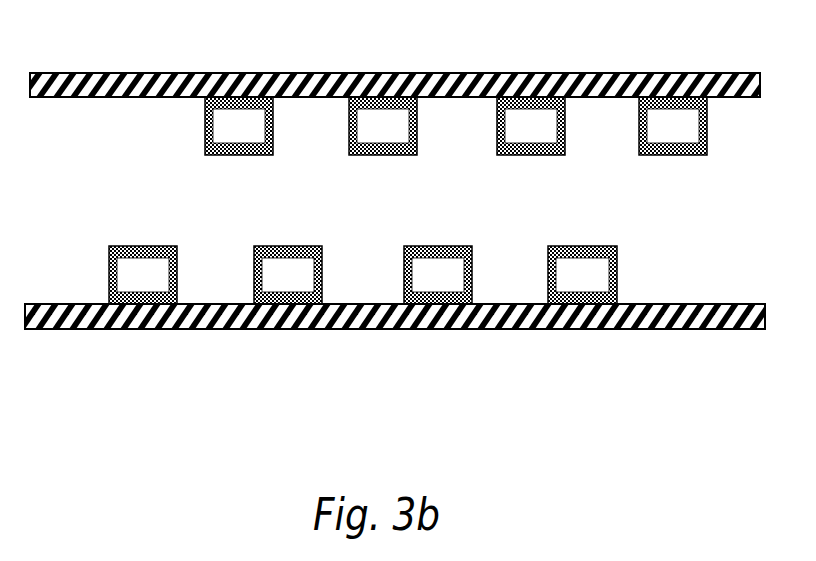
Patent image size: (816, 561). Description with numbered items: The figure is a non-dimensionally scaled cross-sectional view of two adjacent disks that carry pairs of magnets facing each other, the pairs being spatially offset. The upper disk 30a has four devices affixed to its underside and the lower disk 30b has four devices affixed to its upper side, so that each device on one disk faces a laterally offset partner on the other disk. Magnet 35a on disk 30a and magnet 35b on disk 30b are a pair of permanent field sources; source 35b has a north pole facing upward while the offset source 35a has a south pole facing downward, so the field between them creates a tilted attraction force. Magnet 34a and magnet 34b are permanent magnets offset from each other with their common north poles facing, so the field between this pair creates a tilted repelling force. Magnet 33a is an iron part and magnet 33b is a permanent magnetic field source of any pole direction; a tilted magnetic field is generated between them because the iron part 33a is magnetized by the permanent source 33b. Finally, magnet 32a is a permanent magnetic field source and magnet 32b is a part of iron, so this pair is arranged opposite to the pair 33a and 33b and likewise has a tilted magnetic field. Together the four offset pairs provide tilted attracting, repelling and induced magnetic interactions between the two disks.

The disk 30a is at (90, 72).
The magnet 32a is at (228, 100).
The magnet 33a is at (370, 100).
The magnet 34a is at (515, 100).
The magnet 35a is at (660, 100).
The disk 30b is at (712, 330).
The magnet 32b is at (127, 332).
The magnet 33b is at (272, 332).
The magnet 34b is at (417, 332).
The magnet 35b is at (565, 332).